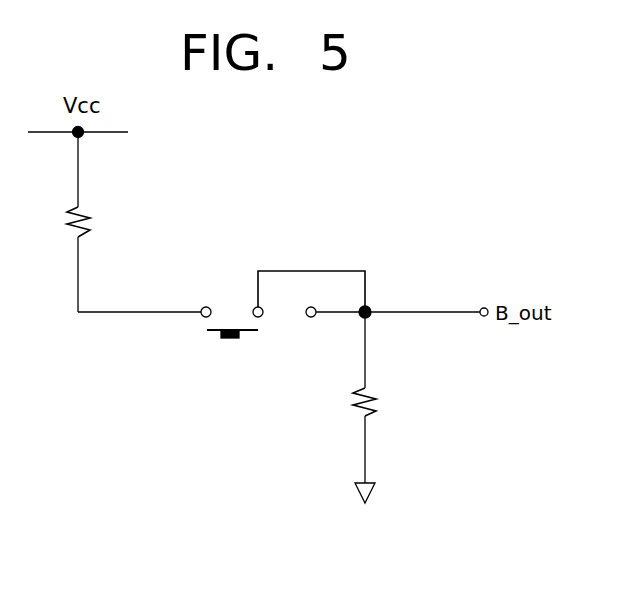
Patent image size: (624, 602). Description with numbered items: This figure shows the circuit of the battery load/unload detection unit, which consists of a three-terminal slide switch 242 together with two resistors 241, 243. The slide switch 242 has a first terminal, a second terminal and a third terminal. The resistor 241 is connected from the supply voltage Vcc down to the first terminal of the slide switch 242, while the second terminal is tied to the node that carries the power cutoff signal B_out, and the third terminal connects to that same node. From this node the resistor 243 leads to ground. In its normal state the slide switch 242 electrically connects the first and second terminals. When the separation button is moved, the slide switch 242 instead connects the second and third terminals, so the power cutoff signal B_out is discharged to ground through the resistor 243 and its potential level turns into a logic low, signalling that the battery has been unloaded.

The resistor 241 is at (93, 222).
The three-terminal slide switch 242 is at (217, 352).
The resistor 243 is at (383, 401).